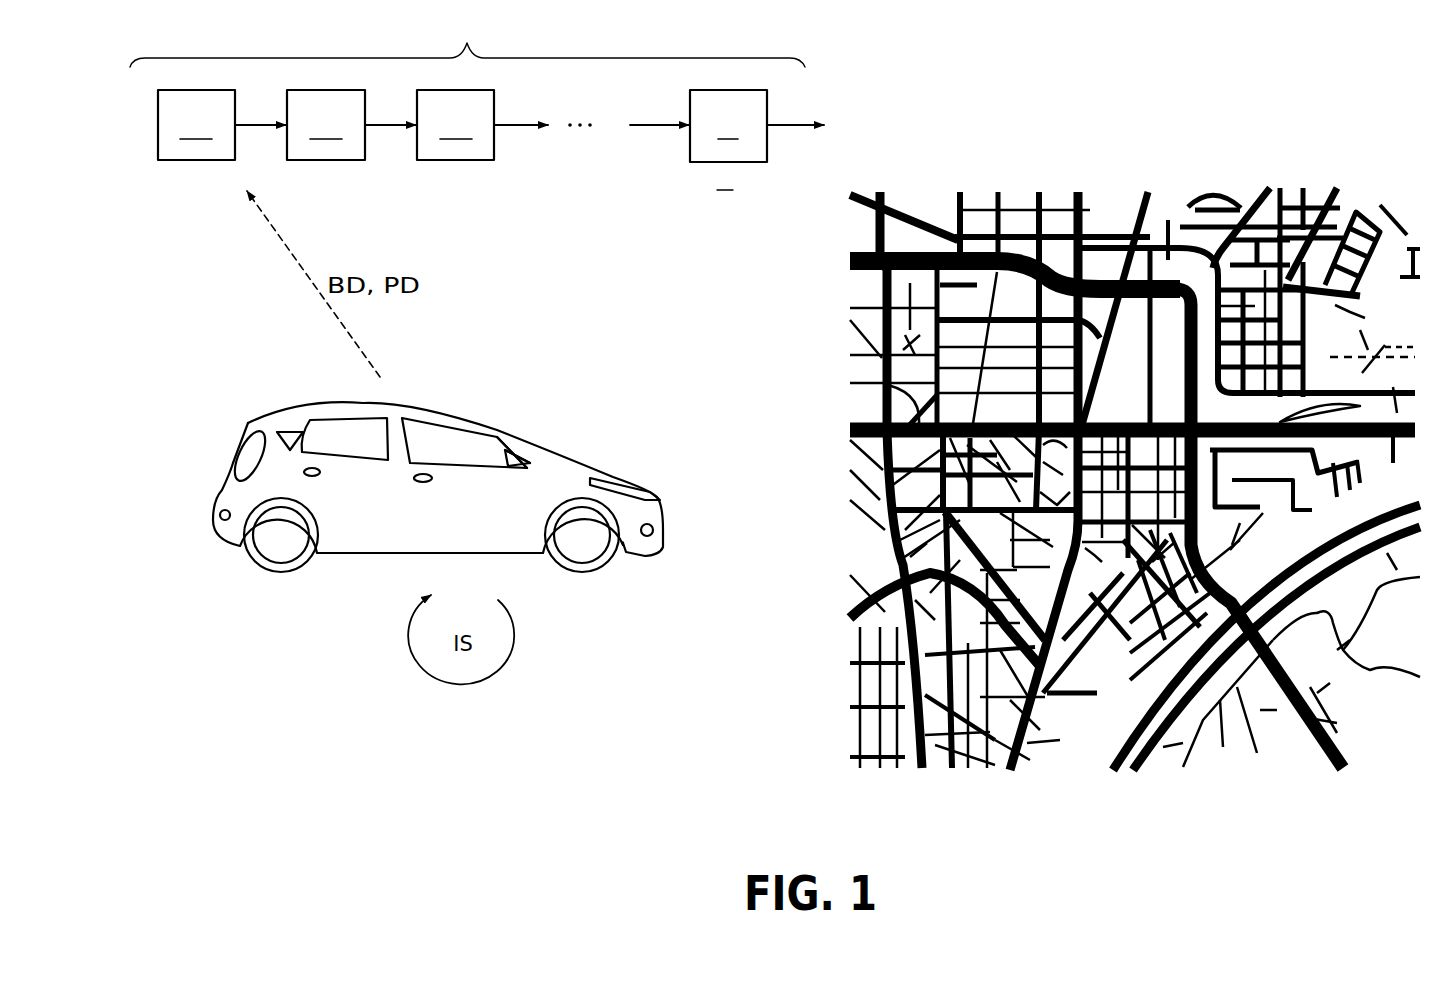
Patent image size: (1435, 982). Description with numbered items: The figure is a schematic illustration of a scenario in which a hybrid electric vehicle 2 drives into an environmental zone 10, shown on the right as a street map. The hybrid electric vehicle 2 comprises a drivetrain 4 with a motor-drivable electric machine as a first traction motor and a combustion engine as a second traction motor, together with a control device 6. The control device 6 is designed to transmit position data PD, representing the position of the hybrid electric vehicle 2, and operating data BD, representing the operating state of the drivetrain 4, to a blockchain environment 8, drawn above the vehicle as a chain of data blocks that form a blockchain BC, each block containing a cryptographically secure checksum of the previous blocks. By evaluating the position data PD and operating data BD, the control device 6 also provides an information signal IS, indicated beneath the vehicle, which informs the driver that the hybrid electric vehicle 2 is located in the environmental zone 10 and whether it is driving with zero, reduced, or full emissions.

The hybrid electric vehicle 2 is at (228, 481).
The drivetrain 4 is at (560, 384).
The control device 6 is at (560, 384).
The blockchain environment 8 is at (862, 82).
The environmental zone 10 is at (1112, 193).